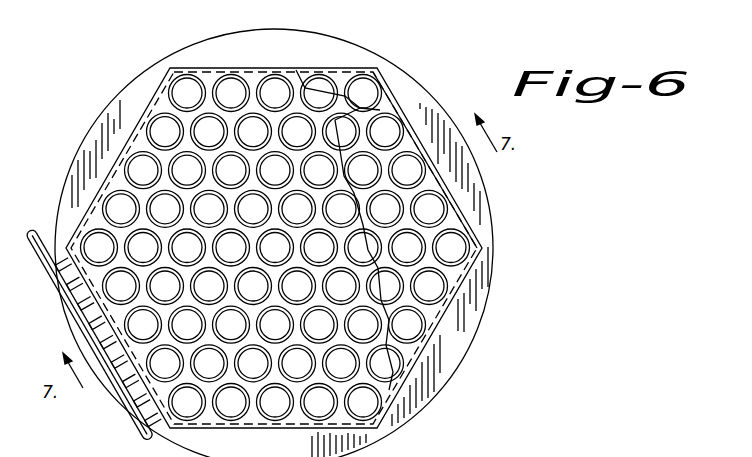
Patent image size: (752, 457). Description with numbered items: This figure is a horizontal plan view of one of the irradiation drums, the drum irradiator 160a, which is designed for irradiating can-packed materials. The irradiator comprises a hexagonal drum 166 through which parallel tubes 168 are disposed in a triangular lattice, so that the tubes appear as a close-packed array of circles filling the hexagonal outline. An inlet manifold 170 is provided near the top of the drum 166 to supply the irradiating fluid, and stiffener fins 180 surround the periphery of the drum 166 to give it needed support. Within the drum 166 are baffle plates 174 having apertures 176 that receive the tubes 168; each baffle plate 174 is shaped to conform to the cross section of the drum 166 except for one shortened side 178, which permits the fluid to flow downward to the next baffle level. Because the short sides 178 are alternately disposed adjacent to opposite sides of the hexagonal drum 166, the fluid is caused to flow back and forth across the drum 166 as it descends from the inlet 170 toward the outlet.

The drum irradiator 160a is at (497, 280).
The hexagonal drum 166 is at (432, 325).
The tubes 168 is at (230, 77).
The inlet manifold 170 is at (62, 287).
The baffle plates 174 is at (445, 223).
The apertures 176 is at (228, 412).
The shortened side 178 is at (380, 110).
The stiffener fins 180 is at (470, 312).